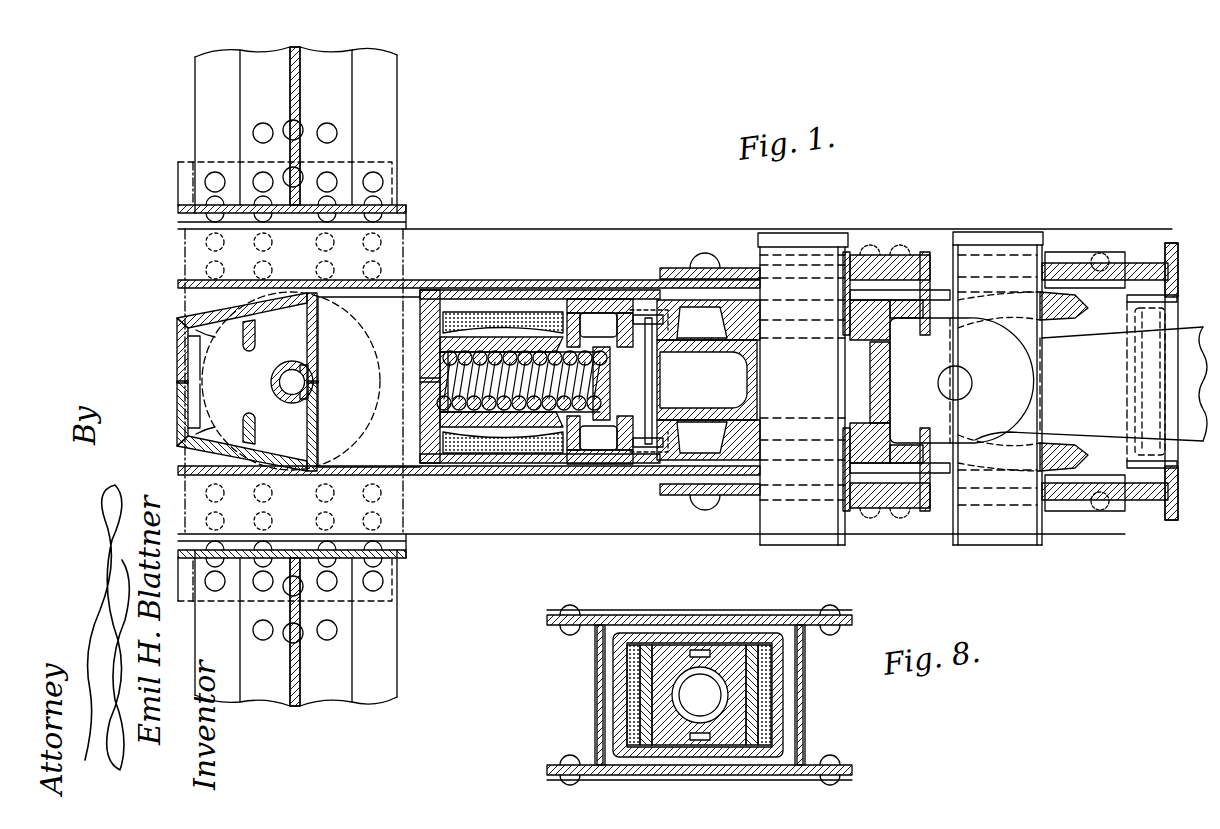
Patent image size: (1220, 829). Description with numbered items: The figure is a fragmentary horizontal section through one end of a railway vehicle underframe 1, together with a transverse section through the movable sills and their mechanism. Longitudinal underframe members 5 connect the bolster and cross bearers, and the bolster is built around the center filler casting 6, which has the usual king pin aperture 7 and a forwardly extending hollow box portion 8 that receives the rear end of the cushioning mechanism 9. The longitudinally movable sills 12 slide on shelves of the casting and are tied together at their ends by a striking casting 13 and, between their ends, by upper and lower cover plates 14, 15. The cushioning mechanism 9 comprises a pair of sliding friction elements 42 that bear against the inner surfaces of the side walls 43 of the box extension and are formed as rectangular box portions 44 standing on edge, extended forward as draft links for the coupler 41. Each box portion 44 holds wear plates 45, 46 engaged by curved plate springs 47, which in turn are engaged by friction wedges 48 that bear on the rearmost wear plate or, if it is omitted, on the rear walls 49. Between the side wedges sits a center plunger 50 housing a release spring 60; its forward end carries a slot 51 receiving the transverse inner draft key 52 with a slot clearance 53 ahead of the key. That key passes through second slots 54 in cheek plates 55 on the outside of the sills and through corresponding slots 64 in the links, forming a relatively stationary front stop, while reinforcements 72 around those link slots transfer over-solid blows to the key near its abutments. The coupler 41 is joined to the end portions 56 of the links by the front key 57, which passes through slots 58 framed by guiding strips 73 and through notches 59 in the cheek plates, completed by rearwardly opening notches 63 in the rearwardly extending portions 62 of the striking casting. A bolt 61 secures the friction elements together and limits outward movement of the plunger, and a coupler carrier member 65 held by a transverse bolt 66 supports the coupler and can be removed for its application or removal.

In FIG. 1, the underframe 1 is at (405, 648).
In FIG. 1, the longitudinal underframe members 5 is at (178, 590).
In FIG. 1, the center filler casting 6 is at (325, 438).
In FIG. 1, the king pin aperture 7 is at (283, 384).
In FIG. 1, the hollow box portion 8 is at (507, 550).
In FIG. 8, the hollow box portion 8 is at (812, 738).
In FIG. 1, the cushioning mechanism 9 is at (345, 722).
In FIG. 8, the cushioning mechanism 9 is at (818, 670).
In FIG. 1, the longitudinally movable sills 12 is at (605, 505).
In FIG. 8, the longitudinally movable sills 12 is at (830, 650).
In FIG. 1, the striking casting 13 is at (1172, 243).
In FIG. 8, the upper cover plate 14 is at (700, 615).
In FIG. 8, the lower cover plate 15 is at (750, 780).
In FIG. 1, the coupler 41 is at (1091, 381).
In FIG. 1, the sliding friction elements 42 is at (672, 505).
In FIG. 1, the side walls 43 is at (520, 505).
In FIG. 8, the side walls 43 is at (820, 688).
In FIG. 1, the box portion 44 is at (470, 505).
In FIG. 8, the box portion 44 is at (815, 712).
In FIG. 1, the wear plate 45 is at (440, 426).
In FIG. 1, the wear plate 46 is at (600, 323).
In FIG. 1, the curved plate springs 47 is at (488, 505).
In FIG. 8, the curved plate springs 47 is at (635, 785).
In FIG. 1, the friction wedges 48 is at (440, 415).
In FIG. 8, the friction wedges 48 is at (740, 612).
In FIG. 1, the rear walls 49 is at (440, 444).
In FIG. 1, the center plunger 50 is at (600, 440).
In FIG. 8, the center plunger 50 is at (700, 740).
In FIG. 1, the slot 51 is at (765, 385).
In FIG. 1, the inner draft key 52 is at (803, 389).
In FIG. 1, the slot clearance 53 is at (858, 395).
In FIG. 1, the second slots 54 is at (870, 548).
In FIG. 1, the cheek plates 55 is at (915, 550).
In FIG. 1, the end portions of link extensions 56 is at (1092, 452).
In FIG. 1, the front key 57 is at (995, 545).
In FIG. 1, the slots 58 is at (938, 442).
In FIG. 1, the notches 59 is at (935, 555).
In FIG. 1, the release spring 60 is at (592, 385).
In FIG. 8, the release spring 60 is at (700, 695).
In FIG. 1, the bolt 61 is at (652, 398).
In FIG. 1, the rearwardly extending portions 62 is at (1095, 540).
In FIG. 1, the rearwardly opening notches 63 is at (1065, 540).
In FIG. 1, the slots 64 is at (730, 520).
In FIG. 1, the coupler carrier member 65 is at (1178, 316).
In FIG. 1, the bolt 66 is at (1142, 378).
In FIG. 1, the reinforcements 72 is at (930, 308).
In FIG. 1, the guiding strips 73 is at (845, 252).